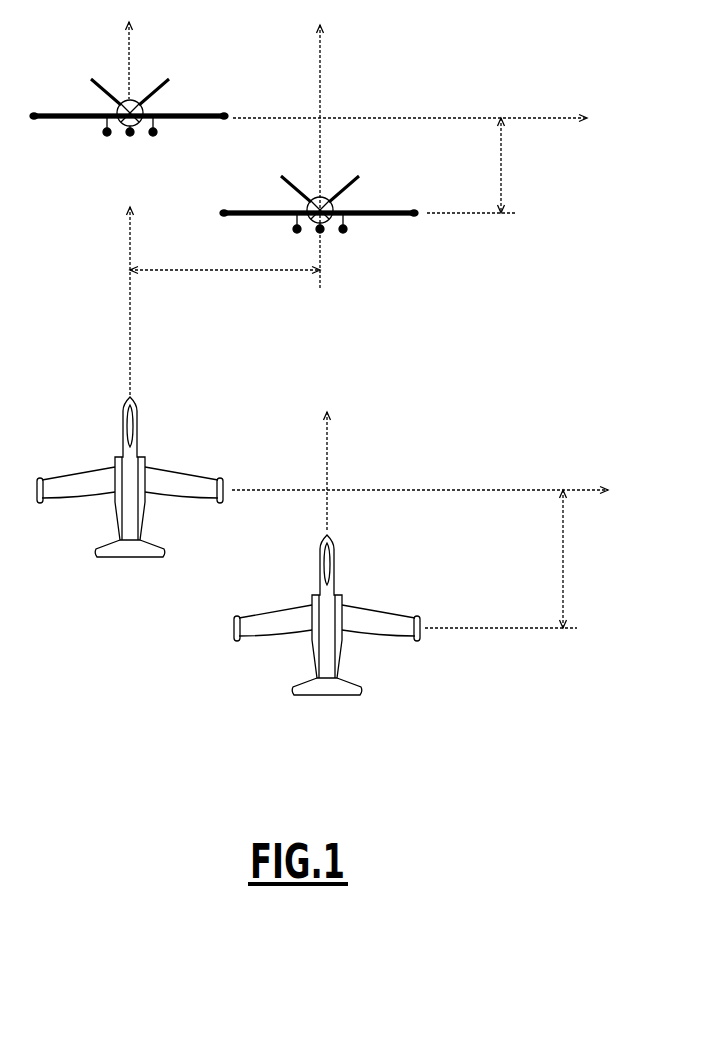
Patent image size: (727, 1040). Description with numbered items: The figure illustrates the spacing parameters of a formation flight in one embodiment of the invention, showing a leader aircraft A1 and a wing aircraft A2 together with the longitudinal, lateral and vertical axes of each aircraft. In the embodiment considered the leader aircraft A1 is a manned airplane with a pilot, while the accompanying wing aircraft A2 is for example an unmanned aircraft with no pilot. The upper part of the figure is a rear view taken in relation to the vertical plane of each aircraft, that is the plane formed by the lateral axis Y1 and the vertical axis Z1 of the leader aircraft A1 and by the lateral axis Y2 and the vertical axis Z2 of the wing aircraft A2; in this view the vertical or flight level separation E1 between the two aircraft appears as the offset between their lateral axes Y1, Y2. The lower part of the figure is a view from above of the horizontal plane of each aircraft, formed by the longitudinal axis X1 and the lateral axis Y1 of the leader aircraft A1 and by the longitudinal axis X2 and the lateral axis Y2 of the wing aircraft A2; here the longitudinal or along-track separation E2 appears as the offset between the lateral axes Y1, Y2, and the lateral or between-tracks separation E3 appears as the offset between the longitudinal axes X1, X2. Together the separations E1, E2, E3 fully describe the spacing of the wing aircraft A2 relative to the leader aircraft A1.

The leader aircraft A1 is at (133, 104).
The wing aircraft A2 is at (325, 200).
The longitudinal axis of the leader aircraft X1 is at (187, 96).
The lateral axis of the leader aircraft Y1 is at (433, 304).
The vertical axis of the leader aircraft Z1 is at (114, 59).
The longitudinal axis of the wing aircraft X2 is at (311, 471).
The lateral axis of the wing aircraft Y2 is at (514, 421).
The vertical axis of the wing aircraft Z2 is at (337, 155).
The vertical separation E1 is at (514, 165).
The longitudinal separation E2 is at (575, 559).
The lateral separation E3 is at (225, 285).